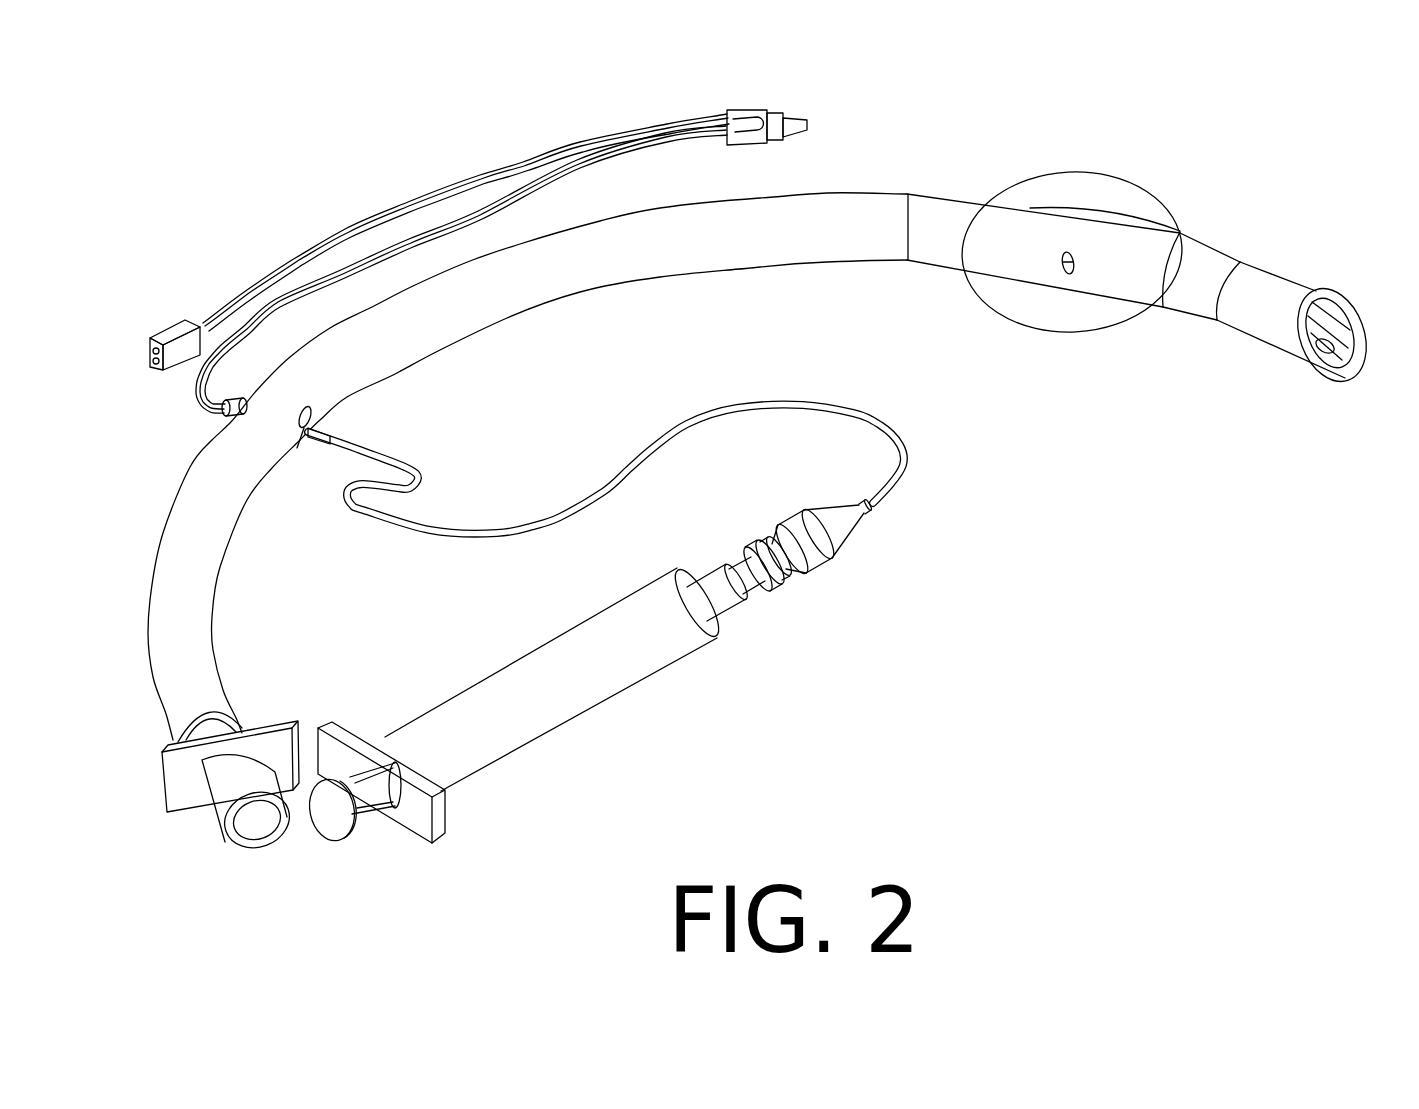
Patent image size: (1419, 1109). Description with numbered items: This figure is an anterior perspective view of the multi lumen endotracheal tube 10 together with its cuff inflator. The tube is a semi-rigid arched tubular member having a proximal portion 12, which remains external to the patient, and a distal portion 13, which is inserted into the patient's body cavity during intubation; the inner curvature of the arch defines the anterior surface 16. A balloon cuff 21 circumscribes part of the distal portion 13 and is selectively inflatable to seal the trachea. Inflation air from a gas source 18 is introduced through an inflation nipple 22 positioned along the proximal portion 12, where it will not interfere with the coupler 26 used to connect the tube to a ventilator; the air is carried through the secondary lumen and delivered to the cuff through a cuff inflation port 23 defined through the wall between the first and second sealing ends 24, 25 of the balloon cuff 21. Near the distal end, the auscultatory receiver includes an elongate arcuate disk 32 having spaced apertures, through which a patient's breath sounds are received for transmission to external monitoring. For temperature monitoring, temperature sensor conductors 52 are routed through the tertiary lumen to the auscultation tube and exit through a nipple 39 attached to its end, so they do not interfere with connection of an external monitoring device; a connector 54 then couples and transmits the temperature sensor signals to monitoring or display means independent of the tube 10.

The multi lumen endotracheal tube 10 is at (761, 507).
The proximal portion 12 is at (763, 507).
The distal portion 13 is at (1271, 251).
The anterior surface 16 is at (638, 262).
The gas source 18 is at (627, 658).
The balloon cuff 21 is at (1072, 272).
The inflation nipple 22 is at (325, 428).
The cuff inflation port 23 is at (1080, 268).
The first sealing end 24 is at (1188, 298).
The second sealing end 25 is at (942, 248).
The coupler 26 is at (232, 788).
The elongate arcuate disk 32 is at (1080, 207).
The nipple 39 is at (778, 128).
The temperature sensor conductors 52 is at (517, 263).
The connector 54 is at (175, 350).